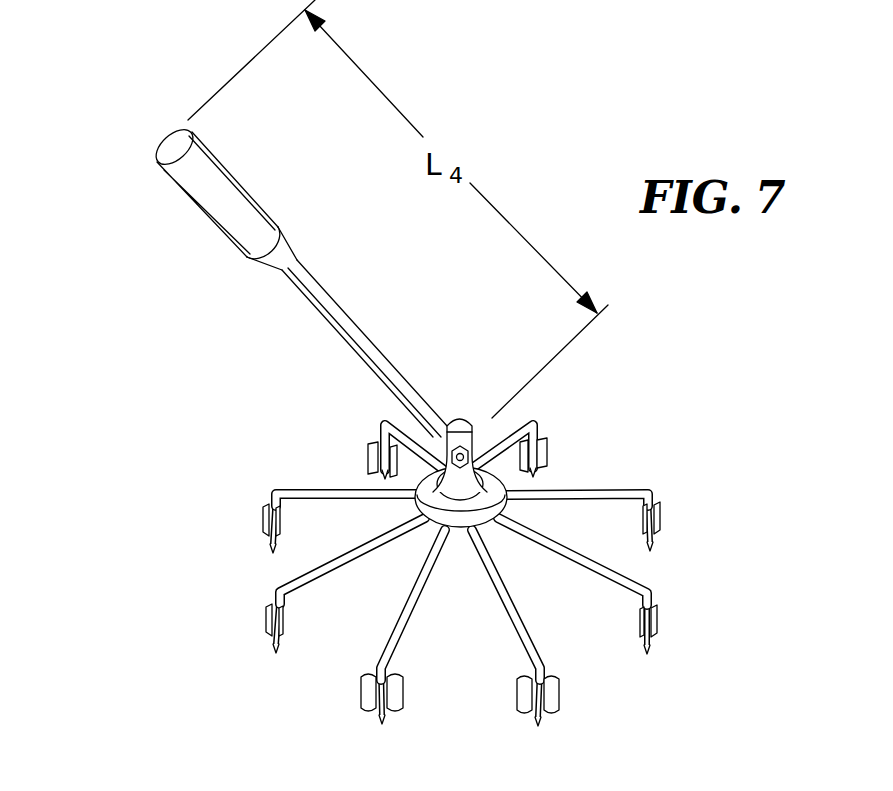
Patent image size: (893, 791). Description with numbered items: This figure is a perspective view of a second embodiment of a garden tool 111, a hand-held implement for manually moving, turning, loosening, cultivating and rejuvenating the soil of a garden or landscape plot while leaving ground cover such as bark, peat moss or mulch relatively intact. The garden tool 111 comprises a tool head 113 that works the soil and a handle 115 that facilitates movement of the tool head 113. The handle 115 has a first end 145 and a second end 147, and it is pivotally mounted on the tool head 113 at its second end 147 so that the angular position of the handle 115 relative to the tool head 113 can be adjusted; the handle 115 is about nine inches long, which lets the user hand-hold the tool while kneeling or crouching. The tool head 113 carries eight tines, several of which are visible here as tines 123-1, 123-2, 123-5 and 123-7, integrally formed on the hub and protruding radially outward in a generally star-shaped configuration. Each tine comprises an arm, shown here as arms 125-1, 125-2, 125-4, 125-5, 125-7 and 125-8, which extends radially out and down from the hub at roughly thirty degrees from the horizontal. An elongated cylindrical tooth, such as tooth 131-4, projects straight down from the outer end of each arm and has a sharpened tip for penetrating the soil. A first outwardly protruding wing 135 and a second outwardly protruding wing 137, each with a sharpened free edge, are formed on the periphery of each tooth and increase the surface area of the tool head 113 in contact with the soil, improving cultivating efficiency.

The garden tool 111 is at (314, 674).
The tool head 113 is at (347, 443).
The handle 115 is at (317, 283).
The first end 145 is at (205, 188).
The second end 147 is at (450, 413).
The arm 125-1 is at (557, 537).
The arm 125-2 is at (579, 522).
The arm 125-4 is at (402, 418).
The arm 125-5 is at (318, 489).
The arm 125-7 is at (428, 590).
The arm 125-8 is at (510, 587).
The tine 123-1 is at (650, 584).
The tine 123-2 is at (607, 487).
The tine 123-5 is at (278, 482).
The tine 123-7 is at (408, 653).
The tooth 131-4 is at (548, 660).
The first outwardly protruding wing 135 is at (263, 614).
The second outwardly protruding wing 137 is at (283, 632).